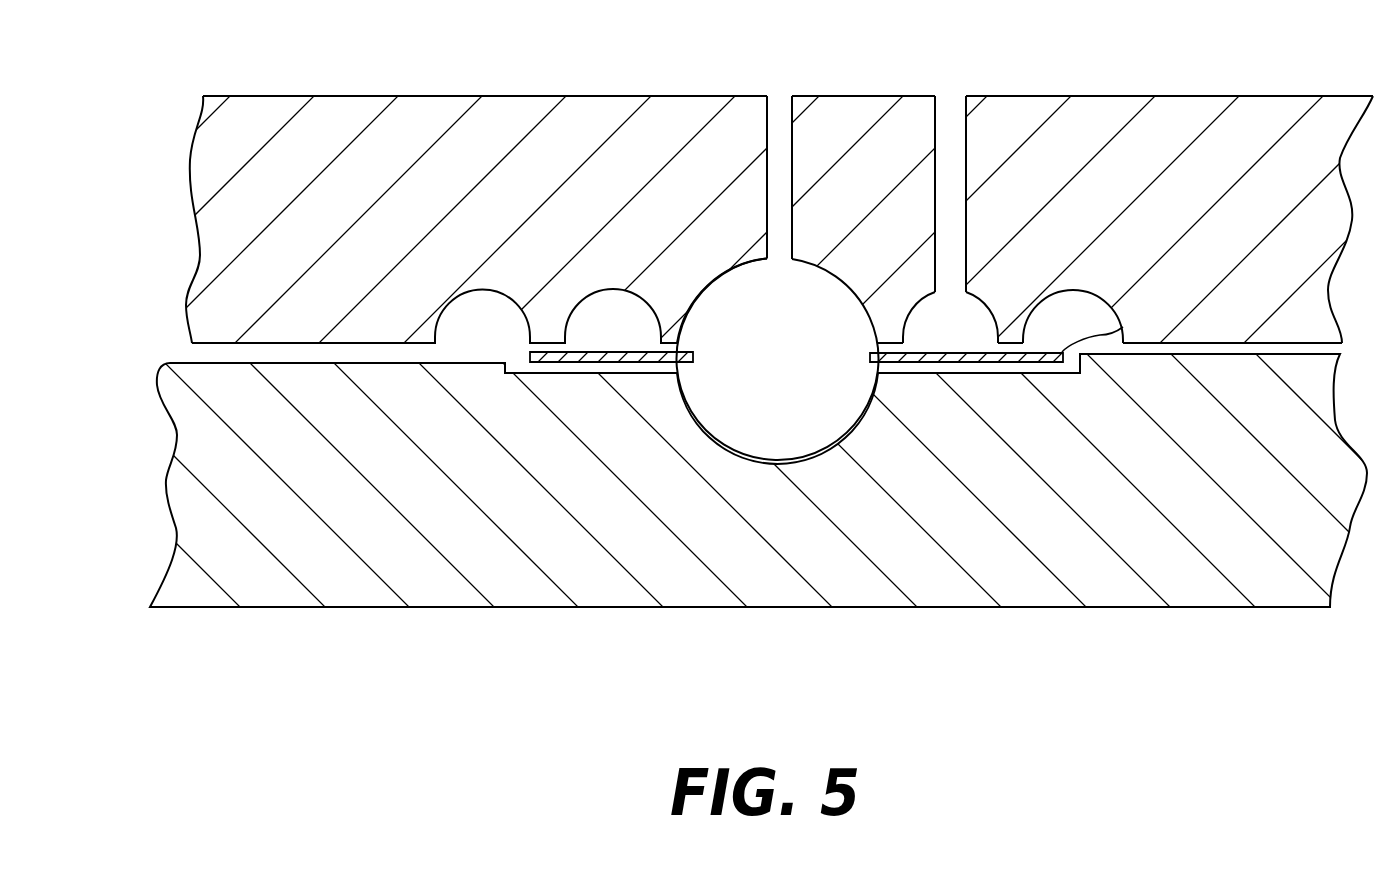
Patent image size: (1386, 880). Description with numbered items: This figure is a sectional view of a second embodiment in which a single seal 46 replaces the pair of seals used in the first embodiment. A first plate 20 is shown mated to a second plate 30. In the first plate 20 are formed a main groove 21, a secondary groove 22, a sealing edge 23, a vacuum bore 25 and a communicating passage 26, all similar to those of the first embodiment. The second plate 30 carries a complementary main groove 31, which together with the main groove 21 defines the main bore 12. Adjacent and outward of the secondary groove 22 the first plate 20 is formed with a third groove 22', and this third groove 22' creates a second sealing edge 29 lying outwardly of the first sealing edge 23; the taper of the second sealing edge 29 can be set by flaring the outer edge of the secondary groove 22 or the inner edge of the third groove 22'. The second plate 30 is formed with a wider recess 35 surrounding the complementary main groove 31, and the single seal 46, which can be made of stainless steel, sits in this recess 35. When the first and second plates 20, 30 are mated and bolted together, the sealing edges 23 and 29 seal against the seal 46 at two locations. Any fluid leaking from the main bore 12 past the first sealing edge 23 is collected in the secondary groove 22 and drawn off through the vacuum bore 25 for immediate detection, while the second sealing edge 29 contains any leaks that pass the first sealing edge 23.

The main bore 12 is at (796, 368).
The first plate 20 is at (198, 227).
The main groove 21 is at (715, 279).
The secondary groove 22 is at (921, 256).
The third groove 22' is at (1091, 285).
The sealing edge 23 is at (876, 342).
The vacuum bore 25 is at (953, 96).
The communicating passage 26 is at (777, 96).
The second sealing edge 29 is at (1013, 342).
The second plate 30 is at (167, 497).
The complementary main groove 31 is at (833, 442).
The recess 35 is at (1007, 373).
The single seal 46 is at (1123, 327).